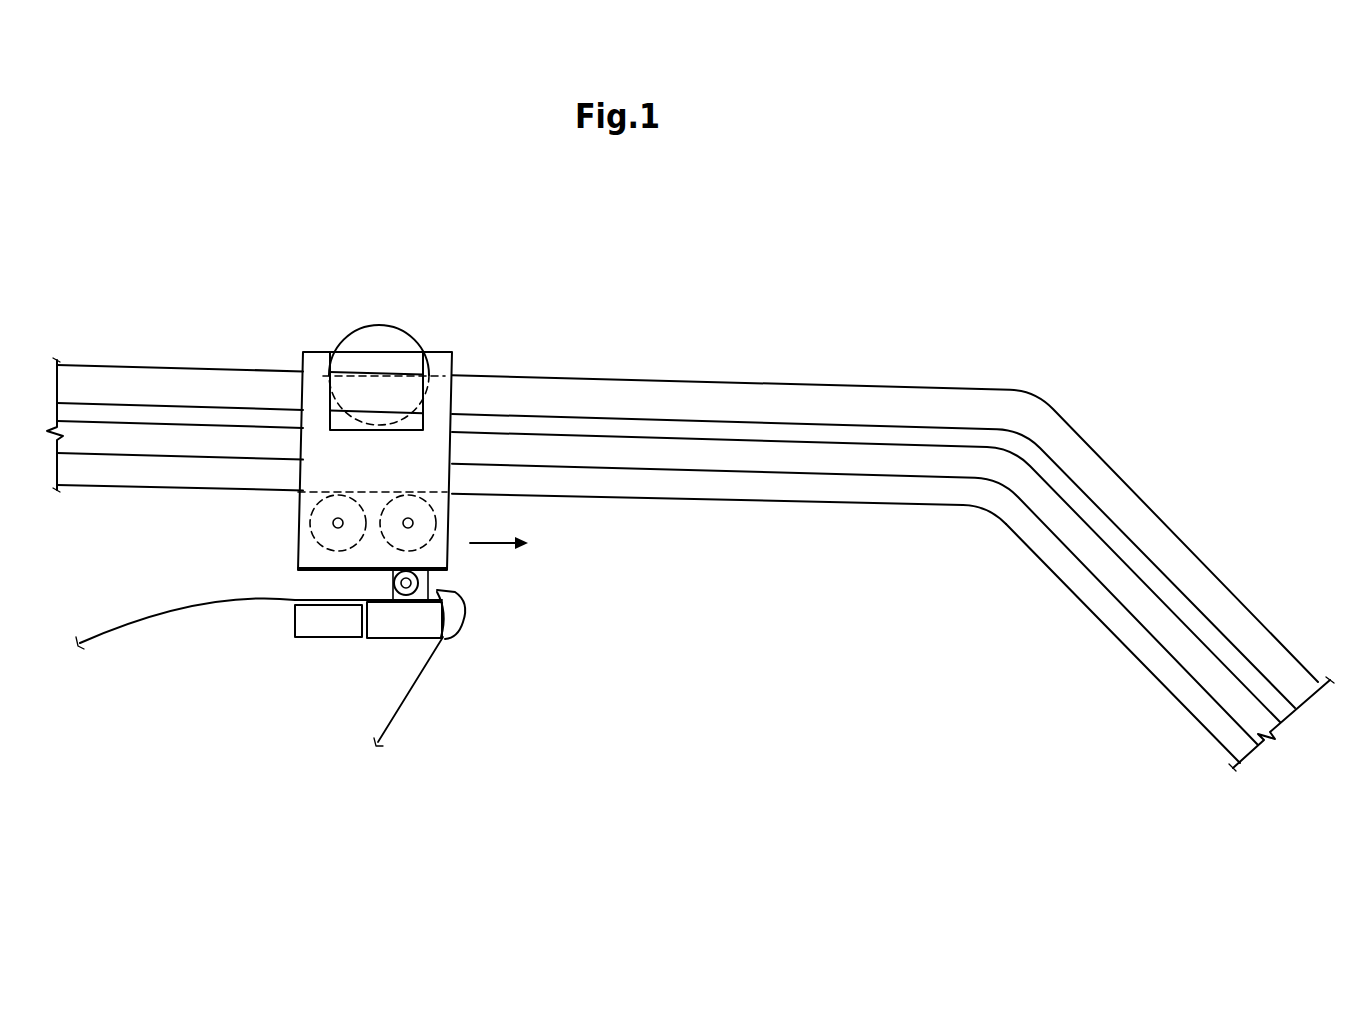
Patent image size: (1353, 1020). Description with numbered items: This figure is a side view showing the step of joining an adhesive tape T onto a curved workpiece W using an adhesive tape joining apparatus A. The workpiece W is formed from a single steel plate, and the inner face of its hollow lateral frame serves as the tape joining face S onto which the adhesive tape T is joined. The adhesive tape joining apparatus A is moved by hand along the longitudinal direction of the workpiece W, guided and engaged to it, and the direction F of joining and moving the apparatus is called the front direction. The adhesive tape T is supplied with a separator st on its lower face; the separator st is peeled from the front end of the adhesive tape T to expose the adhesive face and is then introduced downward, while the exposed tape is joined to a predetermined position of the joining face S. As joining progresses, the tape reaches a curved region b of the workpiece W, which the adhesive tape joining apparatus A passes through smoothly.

The adhesive tape joining apparatus A is at (314, 341).
The workpiece W is at (753, 383).
The tape joining face S is at (708, 500).
The curved region b is at (988, 511).
The adhesive tape T is at (205, 609).
The separator st is at (396, 719).
The direction of joining and moving F is at (510, 546).